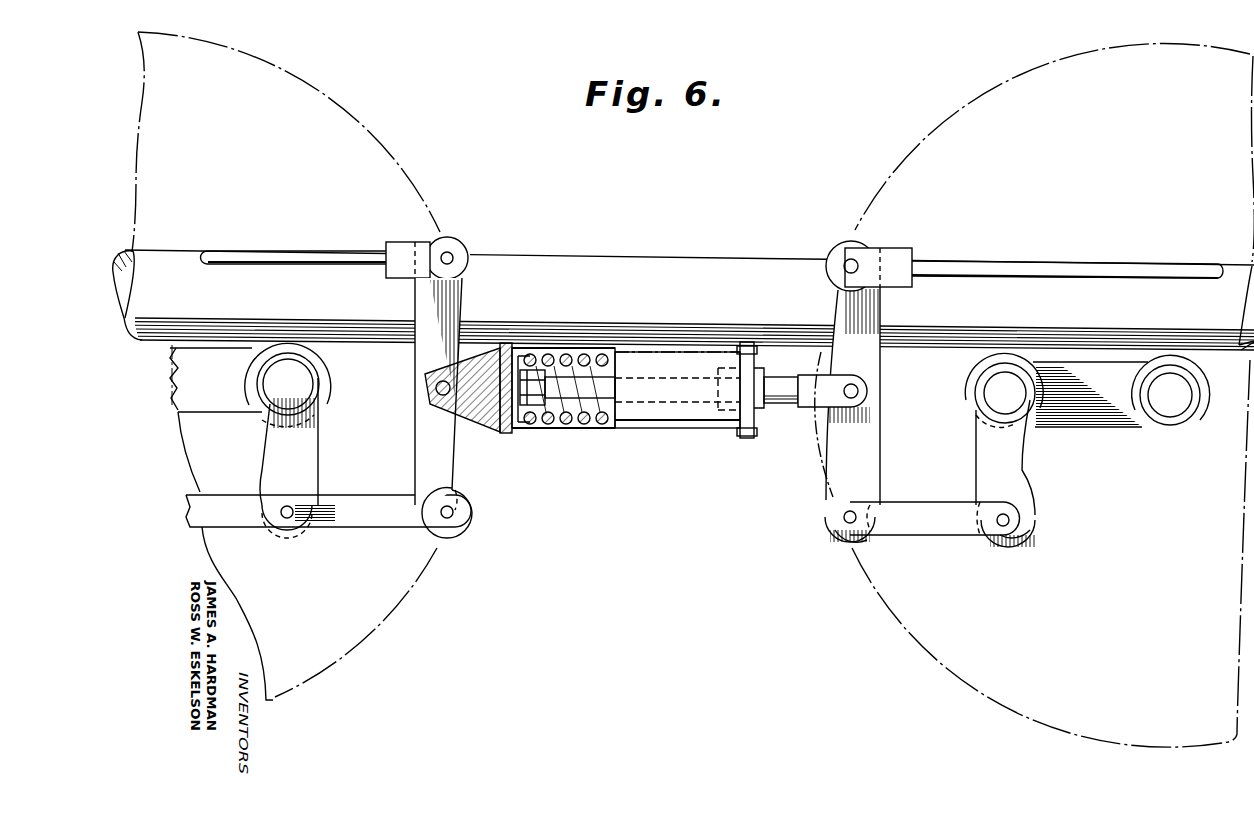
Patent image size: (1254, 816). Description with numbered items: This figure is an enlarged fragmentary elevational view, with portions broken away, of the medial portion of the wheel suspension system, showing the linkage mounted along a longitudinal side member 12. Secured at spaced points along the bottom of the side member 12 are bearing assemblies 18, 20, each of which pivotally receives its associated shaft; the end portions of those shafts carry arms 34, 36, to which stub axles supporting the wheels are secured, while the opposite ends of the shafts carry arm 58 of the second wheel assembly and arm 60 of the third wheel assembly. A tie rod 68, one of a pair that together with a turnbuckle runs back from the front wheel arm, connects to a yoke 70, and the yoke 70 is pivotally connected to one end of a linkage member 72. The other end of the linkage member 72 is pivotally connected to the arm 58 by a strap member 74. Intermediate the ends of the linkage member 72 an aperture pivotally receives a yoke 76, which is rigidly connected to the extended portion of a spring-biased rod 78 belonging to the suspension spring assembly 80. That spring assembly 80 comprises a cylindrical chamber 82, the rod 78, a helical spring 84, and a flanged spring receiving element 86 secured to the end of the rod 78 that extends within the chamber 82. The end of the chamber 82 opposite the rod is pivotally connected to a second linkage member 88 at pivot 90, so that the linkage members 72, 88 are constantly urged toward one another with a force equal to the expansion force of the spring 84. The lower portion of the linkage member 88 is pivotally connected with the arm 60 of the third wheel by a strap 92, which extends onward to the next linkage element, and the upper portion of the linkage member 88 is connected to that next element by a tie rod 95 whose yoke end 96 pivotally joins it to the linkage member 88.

The longitudinal side member 12 is at (711, 270).
The bearing assembly 18 is at (965, 384).
The bearing assembly 20 is at (325, 374).
The arm 34 is at (1140, 428).
The arm 36 is at (222, 399).
The arm 58 is at (1020, 465).
The arm 60 is at (316, 454).
The tie rod 68 is at (1108, 263).
The yoke 70 is at (899, 262).
The linkage member 72 is at (882, 471).
The strap member 74 is at (941, 538).
The yoke 76 is at (806, 412).
The spring-biased rod 78 is at (785, 390).
The suspension spring assembly 80 is at (648, 440).
The cylindrical chamber 82 is at (588, 428).
The helical spring 84 is at (547, 428).
The flanged spring receiving element 86 is at (510, 430).
The linkage member 88 is at (420, 452).
The pivotal connection 90 is at (436, 388).
The strap 92 is at (362, 528).
The tie rod 95 is at (268, 250).
The yoke end 96 is at (406, 250).